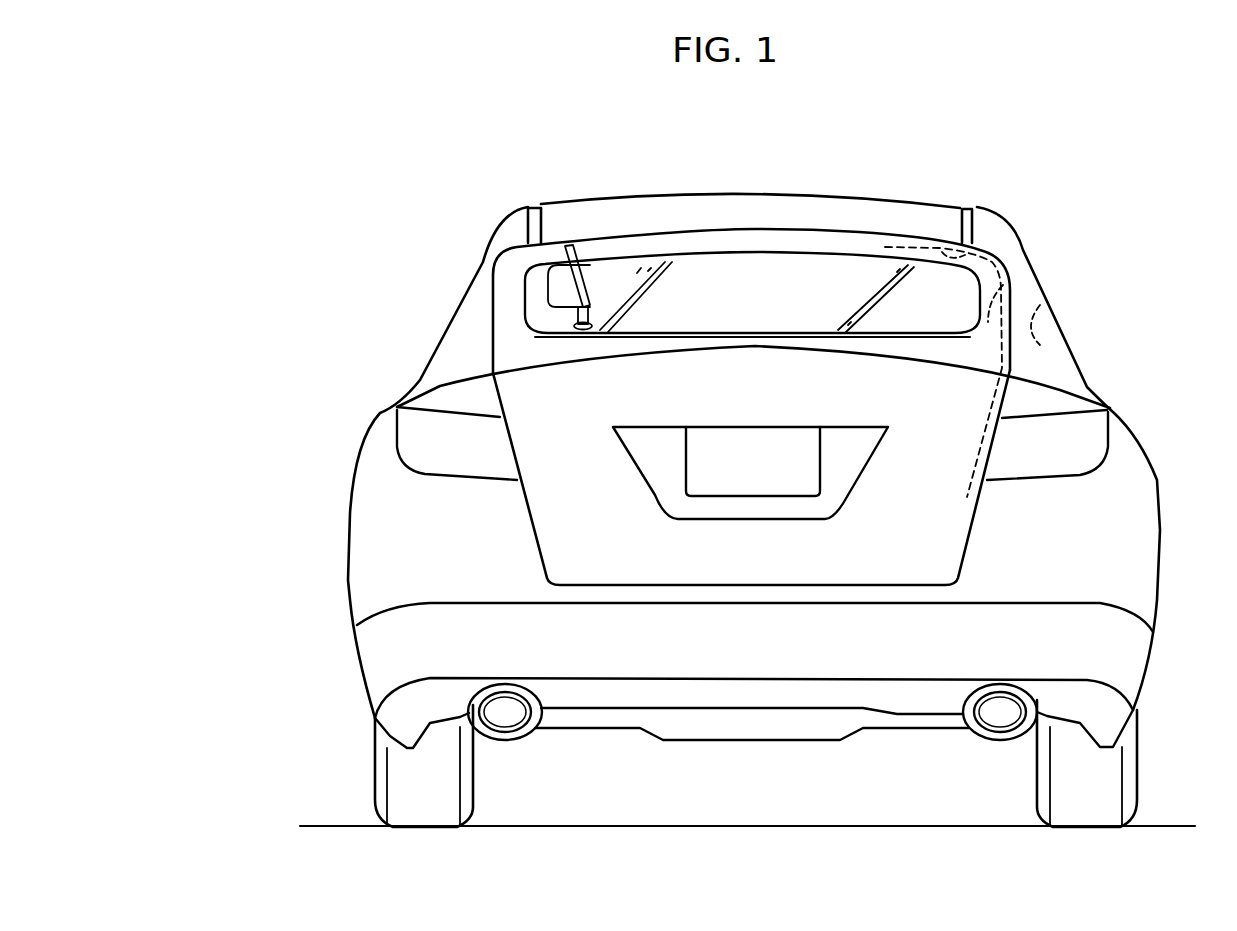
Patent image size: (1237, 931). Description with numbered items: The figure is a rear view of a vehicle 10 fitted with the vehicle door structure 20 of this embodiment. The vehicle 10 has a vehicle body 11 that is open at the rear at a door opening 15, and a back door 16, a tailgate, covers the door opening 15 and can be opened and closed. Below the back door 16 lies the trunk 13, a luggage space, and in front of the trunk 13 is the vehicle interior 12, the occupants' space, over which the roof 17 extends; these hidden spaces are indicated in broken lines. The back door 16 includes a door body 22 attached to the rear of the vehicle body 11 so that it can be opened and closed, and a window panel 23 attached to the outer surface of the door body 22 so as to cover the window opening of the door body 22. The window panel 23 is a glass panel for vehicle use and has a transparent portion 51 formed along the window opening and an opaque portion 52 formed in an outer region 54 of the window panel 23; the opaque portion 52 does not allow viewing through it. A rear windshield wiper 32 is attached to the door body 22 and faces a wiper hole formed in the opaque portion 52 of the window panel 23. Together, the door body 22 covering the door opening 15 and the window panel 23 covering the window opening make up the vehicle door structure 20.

The vehicle 10 is at (320, 178).
The vehicle body 11 is at (365, 345).
The vehicle interior 12 is at (1040, 305).
The trunk 13 is at (1005, 284).
The door opening 15 is at (944, 240).
The back door 16 is at (487, 327).
The roof 17 is at (705, 205).
The vehicle door structure 20 is at (674, 216).
The door body 22 is at (512, 357).
The window panel 23 is at (870, 137).
The rear windshield wiper 32 is at (572, 260).
The transparent portion 51 is at (737, 270).
The opaque portion 52 is at (792, 245).
The outer region 54 is at (513, 300).